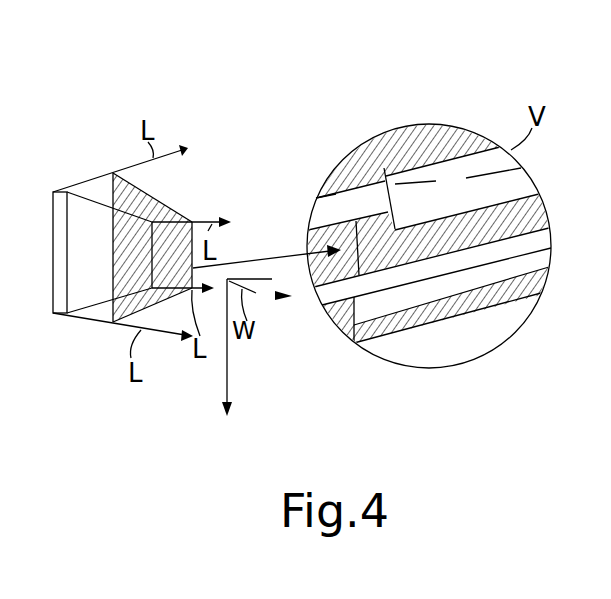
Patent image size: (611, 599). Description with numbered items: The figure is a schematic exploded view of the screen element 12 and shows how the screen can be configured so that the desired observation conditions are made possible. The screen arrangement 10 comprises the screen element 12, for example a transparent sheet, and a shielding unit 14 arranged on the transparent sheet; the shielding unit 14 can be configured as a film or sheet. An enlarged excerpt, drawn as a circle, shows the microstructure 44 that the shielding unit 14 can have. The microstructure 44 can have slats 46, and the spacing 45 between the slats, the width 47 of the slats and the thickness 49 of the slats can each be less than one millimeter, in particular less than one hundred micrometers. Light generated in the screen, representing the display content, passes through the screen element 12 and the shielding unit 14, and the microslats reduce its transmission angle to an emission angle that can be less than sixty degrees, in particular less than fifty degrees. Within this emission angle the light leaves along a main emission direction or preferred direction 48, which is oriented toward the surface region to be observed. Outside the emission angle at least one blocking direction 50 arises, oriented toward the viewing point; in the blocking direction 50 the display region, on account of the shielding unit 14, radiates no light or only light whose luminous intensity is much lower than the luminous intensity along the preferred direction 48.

The display system 10 is at (62, 118).
The screen element 12 is at (57, 191).
The shielding unit 14 is at (176, 211).
The microstructure 44 is at (524, 335).
The spacing 45 is at (374, 169).
The slats 46 is at (436, 235).
The width 47 is at (327, 236).
The preferred direction 48 is at (283, 301).
The thickness 49 is at (256, 293).
The blocking direction 50 is at (227, 384).